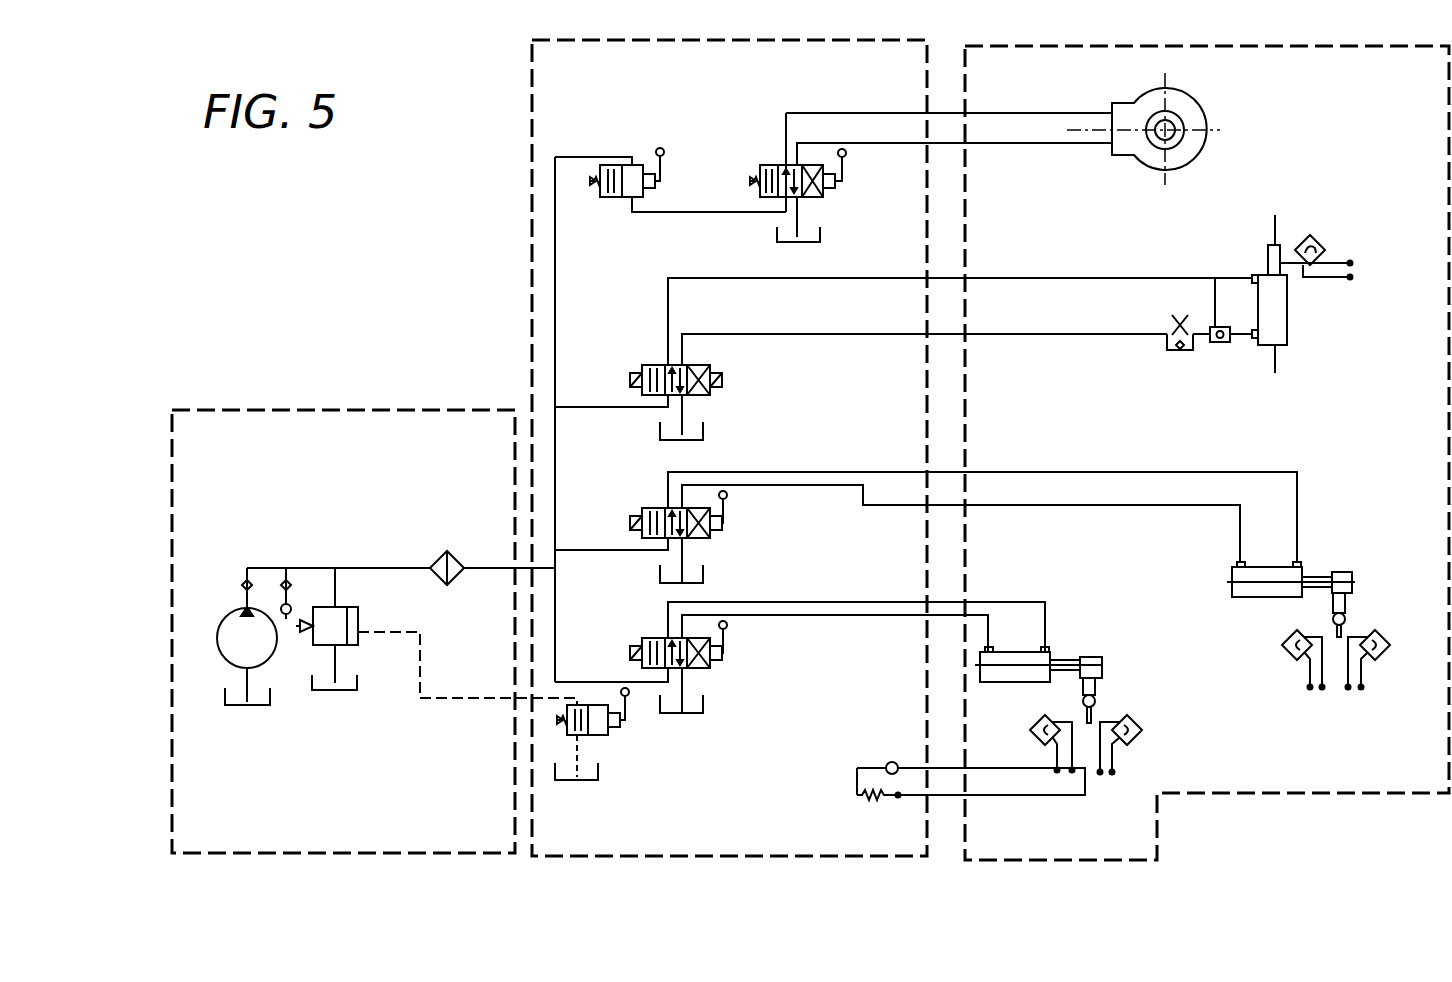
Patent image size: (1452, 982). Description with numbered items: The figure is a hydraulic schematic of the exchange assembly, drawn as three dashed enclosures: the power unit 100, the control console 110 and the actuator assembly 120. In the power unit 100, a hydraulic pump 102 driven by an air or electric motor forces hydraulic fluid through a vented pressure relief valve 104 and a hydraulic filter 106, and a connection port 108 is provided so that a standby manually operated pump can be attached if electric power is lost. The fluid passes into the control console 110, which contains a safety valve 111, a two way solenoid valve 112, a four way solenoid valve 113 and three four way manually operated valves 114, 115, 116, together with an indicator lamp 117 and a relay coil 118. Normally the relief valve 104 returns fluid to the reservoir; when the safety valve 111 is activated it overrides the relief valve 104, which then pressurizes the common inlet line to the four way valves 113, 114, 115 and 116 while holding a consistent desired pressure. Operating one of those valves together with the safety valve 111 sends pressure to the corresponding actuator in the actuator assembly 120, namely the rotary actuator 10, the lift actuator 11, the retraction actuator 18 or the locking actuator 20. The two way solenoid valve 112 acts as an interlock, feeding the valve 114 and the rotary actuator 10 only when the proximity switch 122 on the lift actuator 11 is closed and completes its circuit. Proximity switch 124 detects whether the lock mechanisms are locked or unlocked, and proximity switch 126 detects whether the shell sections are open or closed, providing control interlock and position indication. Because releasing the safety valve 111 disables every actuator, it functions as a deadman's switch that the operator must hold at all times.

The rotary actuator 10 is at (1200, 150).
The lift actuator 11 is at (1290, 318).
The retraction actuator 18 is at (1032, 652).
The locking actuator 20 is at (1278, 565).
The power unit 100 is at (323, 855).
The hydraulic pump 102 is at (222, 660).
The vented pressure relief valve 104 is at (318, 607).
The hydraulic filter 106 is at (447, 552).
The connection port 108 is at (284, 603).
The control console 110 is at (740, 857).
The safety valve 111 is at (608, 737).
The two way solenoid valve 112 is at (604, 197).
The four way solenoid valve 113 is at (700, 395).
The four way manually operated valve 114 is at (818, 197).
The four way manually operated valve 115 is at (700, 538).
The four way manually operated valve 116 is at (700, 668).
The indicator lamp 117 is at (890, 762).
The relay coil 118 is at (868, 797).
The actuator assembly 120 is at (1080, 860).
The proximity switch 122 is at (1320, 237).
The proximity switch 124 is at (1337, 690).
The proximity switch 126 is at (1108, 778).